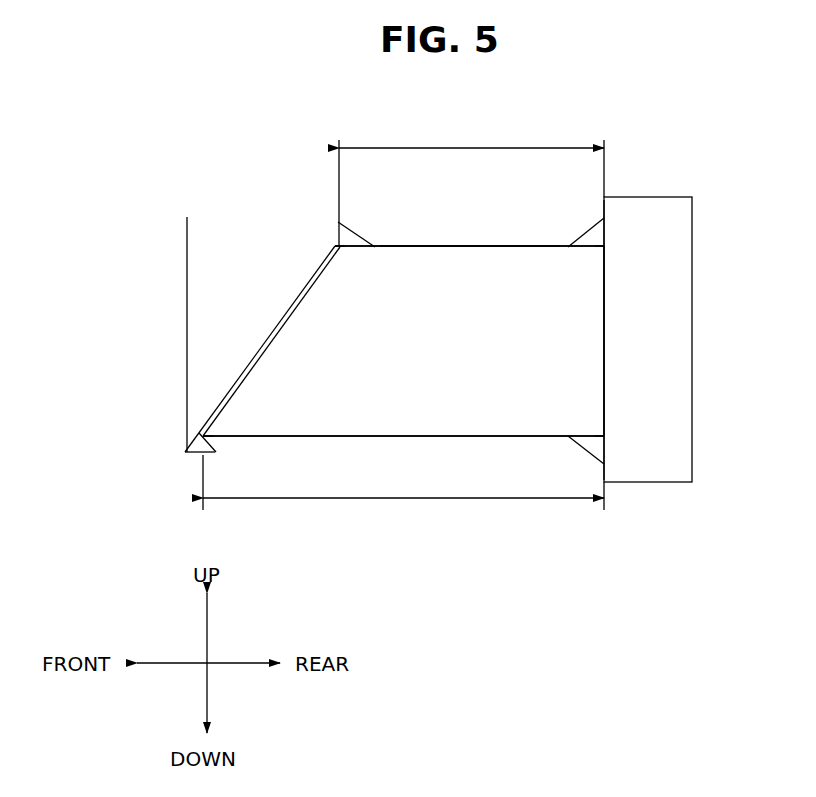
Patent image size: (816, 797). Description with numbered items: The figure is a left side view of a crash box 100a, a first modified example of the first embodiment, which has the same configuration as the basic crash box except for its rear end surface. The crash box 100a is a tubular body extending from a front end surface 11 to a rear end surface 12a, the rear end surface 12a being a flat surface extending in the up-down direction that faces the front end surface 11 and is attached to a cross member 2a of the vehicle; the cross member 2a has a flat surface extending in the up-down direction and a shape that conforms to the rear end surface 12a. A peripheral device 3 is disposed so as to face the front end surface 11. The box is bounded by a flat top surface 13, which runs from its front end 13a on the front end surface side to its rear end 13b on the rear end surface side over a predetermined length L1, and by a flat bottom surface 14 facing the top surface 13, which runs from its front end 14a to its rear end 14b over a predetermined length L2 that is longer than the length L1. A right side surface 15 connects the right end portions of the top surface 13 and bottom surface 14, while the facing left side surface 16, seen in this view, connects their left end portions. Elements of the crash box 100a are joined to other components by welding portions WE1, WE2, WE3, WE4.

The crash box 100a is at (567, 122).
The cross member 2a is at (648, 205).
The peripheral device 3 is at (254, 297).
The front end surface 11 is at (238, 375).
The rear end surface 12a is at (604, 332).
The top surface 13 is at (460, 247).
The front end of top surface 13a is at (340, 240).
The rear end of top surface 13b is at (601, 240).
The bottom surface 14 is at (436, 437).
The front end of bottom surface 14a is at (214, 448).
The rear end of bottom surface 14b is at (590, 446).
The right side surface 15 is at (427, 247).
The left side surface 16 is at (464, 359).
The welding portion WE1 is at (582, 247).
The welding portion WE2 is at (578, 442).
The welding portion WE3 is at (366, 247).
The welding portion WE4 is at (215, 445).
The length of top surface L1 is at (471, 182).
The length of bottom surface L2 is at (403, 499).